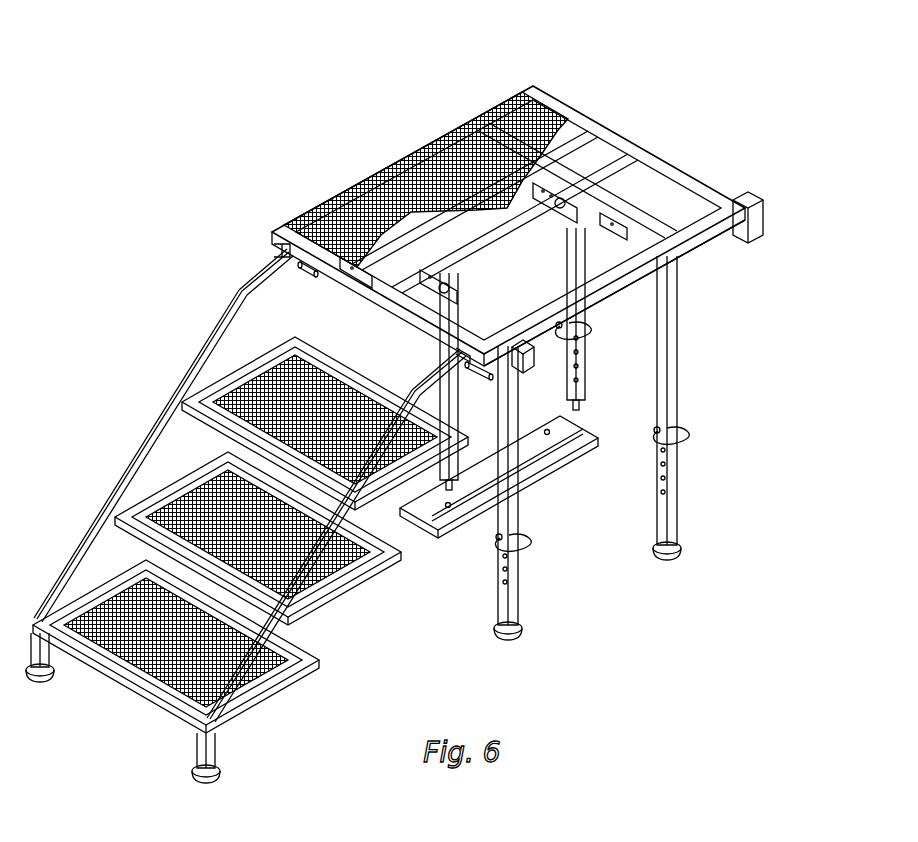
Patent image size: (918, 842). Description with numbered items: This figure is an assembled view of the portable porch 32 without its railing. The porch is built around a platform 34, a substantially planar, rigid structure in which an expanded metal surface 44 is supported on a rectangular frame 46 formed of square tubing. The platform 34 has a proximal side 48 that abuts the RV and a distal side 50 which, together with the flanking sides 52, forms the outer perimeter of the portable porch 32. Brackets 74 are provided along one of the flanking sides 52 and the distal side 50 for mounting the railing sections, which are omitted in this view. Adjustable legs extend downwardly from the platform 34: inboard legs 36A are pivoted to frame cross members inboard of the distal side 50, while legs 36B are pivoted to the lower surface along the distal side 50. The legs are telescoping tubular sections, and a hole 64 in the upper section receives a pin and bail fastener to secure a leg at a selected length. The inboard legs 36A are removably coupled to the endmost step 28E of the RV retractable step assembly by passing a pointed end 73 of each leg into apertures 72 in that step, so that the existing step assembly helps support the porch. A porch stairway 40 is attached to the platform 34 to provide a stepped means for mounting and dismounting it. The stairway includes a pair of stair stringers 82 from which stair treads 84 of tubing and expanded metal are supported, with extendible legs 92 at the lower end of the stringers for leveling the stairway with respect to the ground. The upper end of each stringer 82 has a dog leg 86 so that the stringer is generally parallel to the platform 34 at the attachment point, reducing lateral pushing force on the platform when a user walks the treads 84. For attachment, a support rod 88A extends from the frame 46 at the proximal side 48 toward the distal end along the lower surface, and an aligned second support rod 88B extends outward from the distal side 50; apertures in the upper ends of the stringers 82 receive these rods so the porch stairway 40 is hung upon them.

The portable porch 32 is at (625, 85).
The platform 34 is at (396, 150).
The expanded metal surface 44 is at (373, 170).
The frame 46 is at (688, 180).
The flanking sides 52 is at (640, 153).
The brackets 74 is at (752, 203).
The proximal side 48 is at (272, 250).
The support rod 88A is at (310, 270).
The second support rod 88B is at (480, 365).
The dog leg 86 is at (262, 296).
The inboard adjustable legs 36A is at (440, 345).
The adjustable legs along distal side 36B is at (680, 325).
The extendible legs 92 is at (455, 353).
The pointed end 73 is at (580, 392).
The apertures 72 is at (560, 432).
The distal side 50 is at (700, 250).
The hole 64 is at (670, 440).
The endmost step 28E is at (555, 470).
The porch stairway 40 is at (178, 372).
The stair stringers 82 is at (120, 490).
The stair treads 84 is at (127, 683).